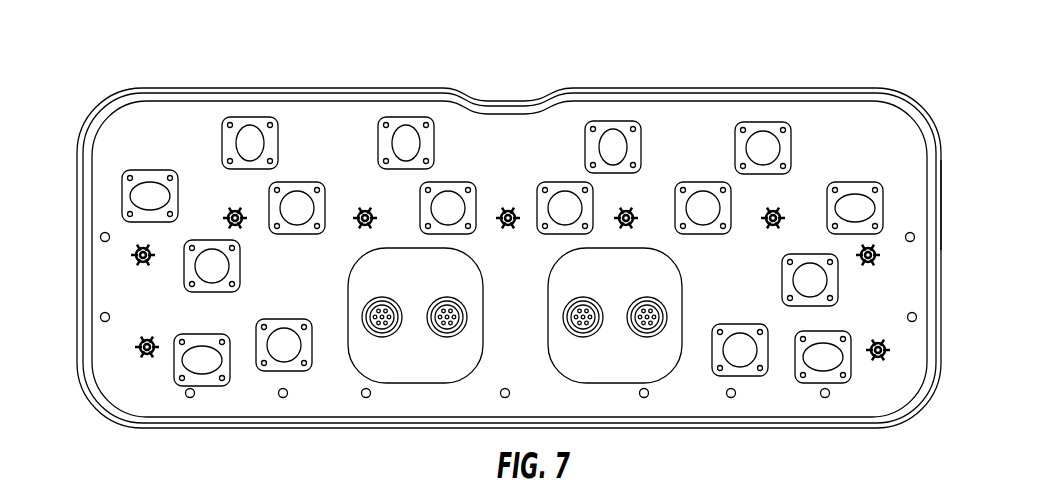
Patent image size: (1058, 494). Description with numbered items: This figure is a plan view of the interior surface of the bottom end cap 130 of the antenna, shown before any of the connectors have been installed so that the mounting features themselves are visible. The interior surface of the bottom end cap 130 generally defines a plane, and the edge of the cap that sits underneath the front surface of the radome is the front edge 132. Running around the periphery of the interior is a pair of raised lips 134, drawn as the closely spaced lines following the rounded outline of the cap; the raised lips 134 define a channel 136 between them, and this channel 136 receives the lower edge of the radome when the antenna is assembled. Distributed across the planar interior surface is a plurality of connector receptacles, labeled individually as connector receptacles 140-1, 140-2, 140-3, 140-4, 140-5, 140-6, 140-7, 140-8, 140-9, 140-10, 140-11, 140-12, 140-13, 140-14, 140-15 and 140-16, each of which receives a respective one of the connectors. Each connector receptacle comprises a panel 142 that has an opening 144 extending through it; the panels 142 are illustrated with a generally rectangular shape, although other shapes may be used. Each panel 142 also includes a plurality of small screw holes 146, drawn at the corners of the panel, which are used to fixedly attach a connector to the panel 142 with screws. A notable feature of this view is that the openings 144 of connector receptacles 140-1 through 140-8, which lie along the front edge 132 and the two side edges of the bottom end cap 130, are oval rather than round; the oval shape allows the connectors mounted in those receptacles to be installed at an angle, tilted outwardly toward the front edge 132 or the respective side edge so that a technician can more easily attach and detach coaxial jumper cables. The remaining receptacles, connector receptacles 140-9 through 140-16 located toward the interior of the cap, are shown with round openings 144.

The bottom end cap 130 is at (125, 58).
The front edge 132 is at (655, 88).
The raised lips 134 is at (217, 98).
The channel 136 is at (317, 108).
The panel 142 is at (936, 162).
The opening 144 is at (767, 148).
The screw holes 146 is at (880, 228).
The connector receptacle 140-1 is at (250, 117).
The connector receptacle 140-2 is at (410, 117).
The connector receptacle 140-3 is at (604, 121).
The connector receptacle 140-4 is at (794, 106).
The connector receptacle 140-5 is at (160, 150).
The connector receptacle 140-6 is at (212, 324).
The connector receptacle 140-7 is at (860, 182).
The connector receptacle 140-8 is at (870, 320).
The connector receptacle 140-9 is at (313, 309).
The connector receptacle 140-10 is at (290, 270).
The connector receptacle 140-11 is at (326, 163).
The connector receptacle 140-12 is at (478, 163).
The connector receptacle 140-13 is at (565, 182).
The connector receptacle 140-14 is at (710, 182).
The connector receptacle 140-15 is at (782, 277).
The connector receptacle 140-16 is at (743, 324).